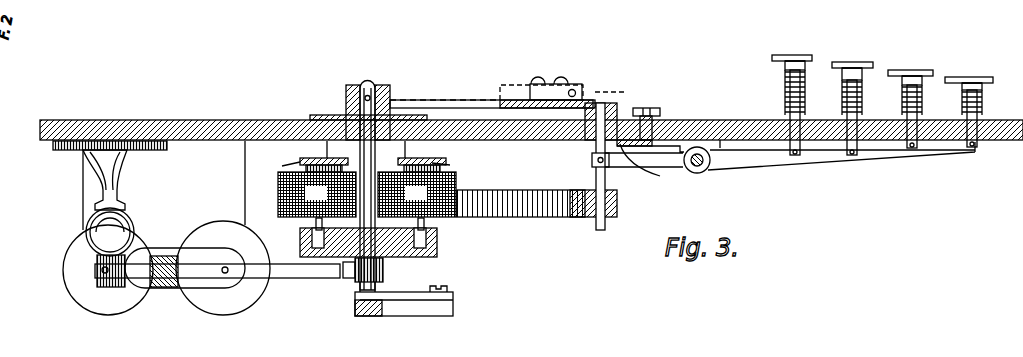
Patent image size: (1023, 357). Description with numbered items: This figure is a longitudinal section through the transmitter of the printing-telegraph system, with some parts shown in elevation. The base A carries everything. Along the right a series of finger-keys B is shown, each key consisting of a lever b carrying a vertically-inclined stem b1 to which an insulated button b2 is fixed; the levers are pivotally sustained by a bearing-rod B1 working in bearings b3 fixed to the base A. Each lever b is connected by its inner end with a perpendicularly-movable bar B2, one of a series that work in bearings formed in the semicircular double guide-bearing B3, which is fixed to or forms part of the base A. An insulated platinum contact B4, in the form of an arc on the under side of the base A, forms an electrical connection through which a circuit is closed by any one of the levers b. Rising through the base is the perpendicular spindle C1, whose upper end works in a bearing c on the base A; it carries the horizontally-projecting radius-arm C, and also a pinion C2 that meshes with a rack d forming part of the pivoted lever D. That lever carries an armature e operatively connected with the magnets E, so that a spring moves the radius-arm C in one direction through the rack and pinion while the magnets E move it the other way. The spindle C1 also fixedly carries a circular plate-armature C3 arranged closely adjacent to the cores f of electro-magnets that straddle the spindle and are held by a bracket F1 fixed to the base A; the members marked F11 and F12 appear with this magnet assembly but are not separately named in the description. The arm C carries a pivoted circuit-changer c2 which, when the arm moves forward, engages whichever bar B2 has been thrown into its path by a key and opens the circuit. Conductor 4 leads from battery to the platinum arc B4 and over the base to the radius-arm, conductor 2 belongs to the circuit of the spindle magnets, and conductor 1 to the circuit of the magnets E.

The base A is at (270, 120).
The finger-keys B is at (772, 57).
The bearing-rod B1 is at (702, 170).
The perpendicularly-movable bar B2 is at (604, 176).
The semicircular double guide-bearing B3 is at (617, 108).
The insulated platinum contact B4 is at (646, 166).
The radius-arm C is at (474, 100).
The spindle C1 is at (366, 82).
The pinion C2 is at (384, 268).
The circular plate-armature C3 is at (300, 162).
The pivoted lever D is at (296, 278).
The magnets E is at (166, 268).
The bracket F1 is at (367, 194).
The frame F11 is at (437, 247).
The strip F12 is at (430, 151).
The levers b is at (790, 155).
The vertically-inclined stems b1 is at (962, 104).
The insulated buttons b2 is at (883, 61).
The bearings b3 is at (715, 136).
The bearing c is at (348, 110).
The circuit-changer c2 is at (385, 298).
The rack d is at (352, 288).
The armature e is at (171, 268).
The cores f is at (363, 166).
The conductor 1 is at (70, 318).
The conductor 2 is at (300, 218).
The conductor 4 is at (712, 172).